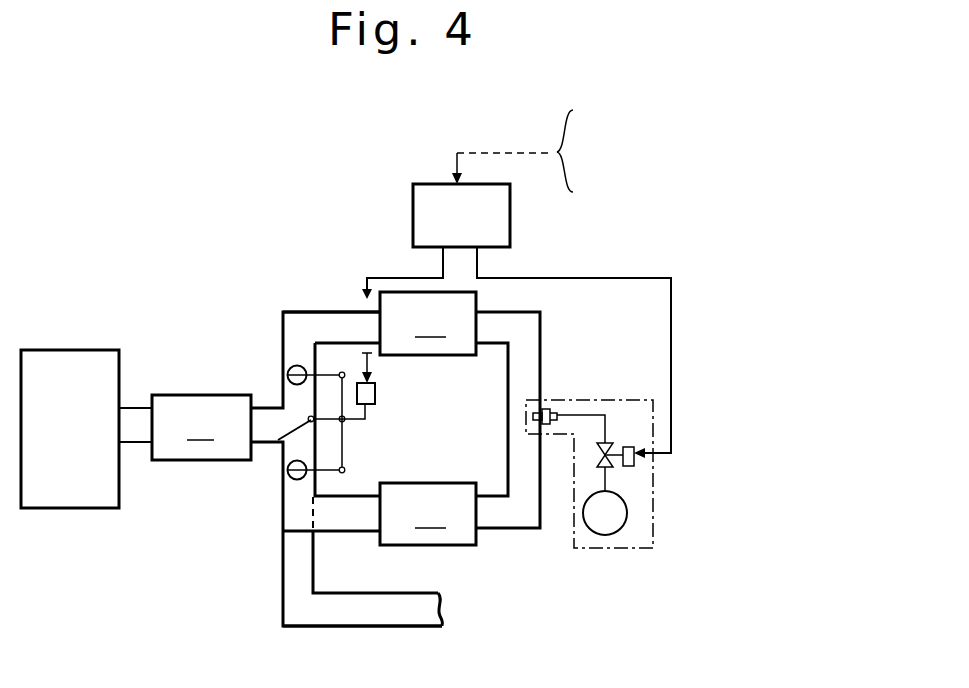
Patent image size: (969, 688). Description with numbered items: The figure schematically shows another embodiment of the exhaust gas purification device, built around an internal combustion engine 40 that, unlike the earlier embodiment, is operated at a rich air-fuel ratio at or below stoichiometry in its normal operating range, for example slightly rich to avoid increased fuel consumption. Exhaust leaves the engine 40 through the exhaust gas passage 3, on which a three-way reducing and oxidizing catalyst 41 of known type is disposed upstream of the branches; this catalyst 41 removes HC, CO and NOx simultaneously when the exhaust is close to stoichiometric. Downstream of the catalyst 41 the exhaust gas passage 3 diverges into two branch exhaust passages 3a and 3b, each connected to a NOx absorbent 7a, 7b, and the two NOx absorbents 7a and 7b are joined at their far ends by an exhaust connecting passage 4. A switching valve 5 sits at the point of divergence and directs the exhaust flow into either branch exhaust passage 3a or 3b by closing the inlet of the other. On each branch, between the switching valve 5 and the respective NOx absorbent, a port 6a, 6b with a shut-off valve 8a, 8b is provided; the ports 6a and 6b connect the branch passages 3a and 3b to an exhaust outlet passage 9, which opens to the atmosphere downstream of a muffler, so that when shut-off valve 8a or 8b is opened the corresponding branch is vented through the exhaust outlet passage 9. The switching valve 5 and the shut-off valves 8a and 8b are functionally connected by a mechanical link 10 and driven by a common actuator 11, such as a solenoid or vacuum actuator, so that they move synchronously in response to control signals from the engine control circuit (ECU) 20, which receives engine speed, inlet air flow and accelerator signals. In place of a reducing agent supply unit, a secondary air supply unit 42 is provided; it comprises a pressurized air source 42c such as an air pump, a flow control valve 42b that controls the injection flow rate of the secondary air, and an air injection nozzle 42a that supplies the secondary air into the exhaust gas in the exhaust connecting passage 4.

The internal combustion engine 40 is at (88, 350).
The exhaust gas passage 3 is at (133, 442).
The three-way reducing and oxidizing catalyst 41 is at (201, 427).
The exhaust connecting passage 4 is at (540, 330).
The branch exhaust passage 3a is at (327, 312).
The branch exhaust passage 3b is at (351, 531).
The exhaust outlet passage 9 is at (368, 626).
The NOx absorbent 7a is at (428, 323).
The NOx absorbent 7b is at (428, 514).
The engine control circuit (ECU) 20 is at (510, 212).
The port 6a is at (284, 367).
The port 6b is at (283, 480).
The shut-off valve 8a is at (297, 367).
The shut-off valve 8b is at (292, 480).
The switching valve 5 is at (284, 433).
The mechanical link 10 is at (343, 444).
The actuator 11 is at (375, 395).
The secondary air supply unit 42 is at (634, 494).
The air injection nozzle 42a is at (557, 408).
The flow control valve 42b is at (630, 467).
The pressurized air source 42c is at (627, 513).